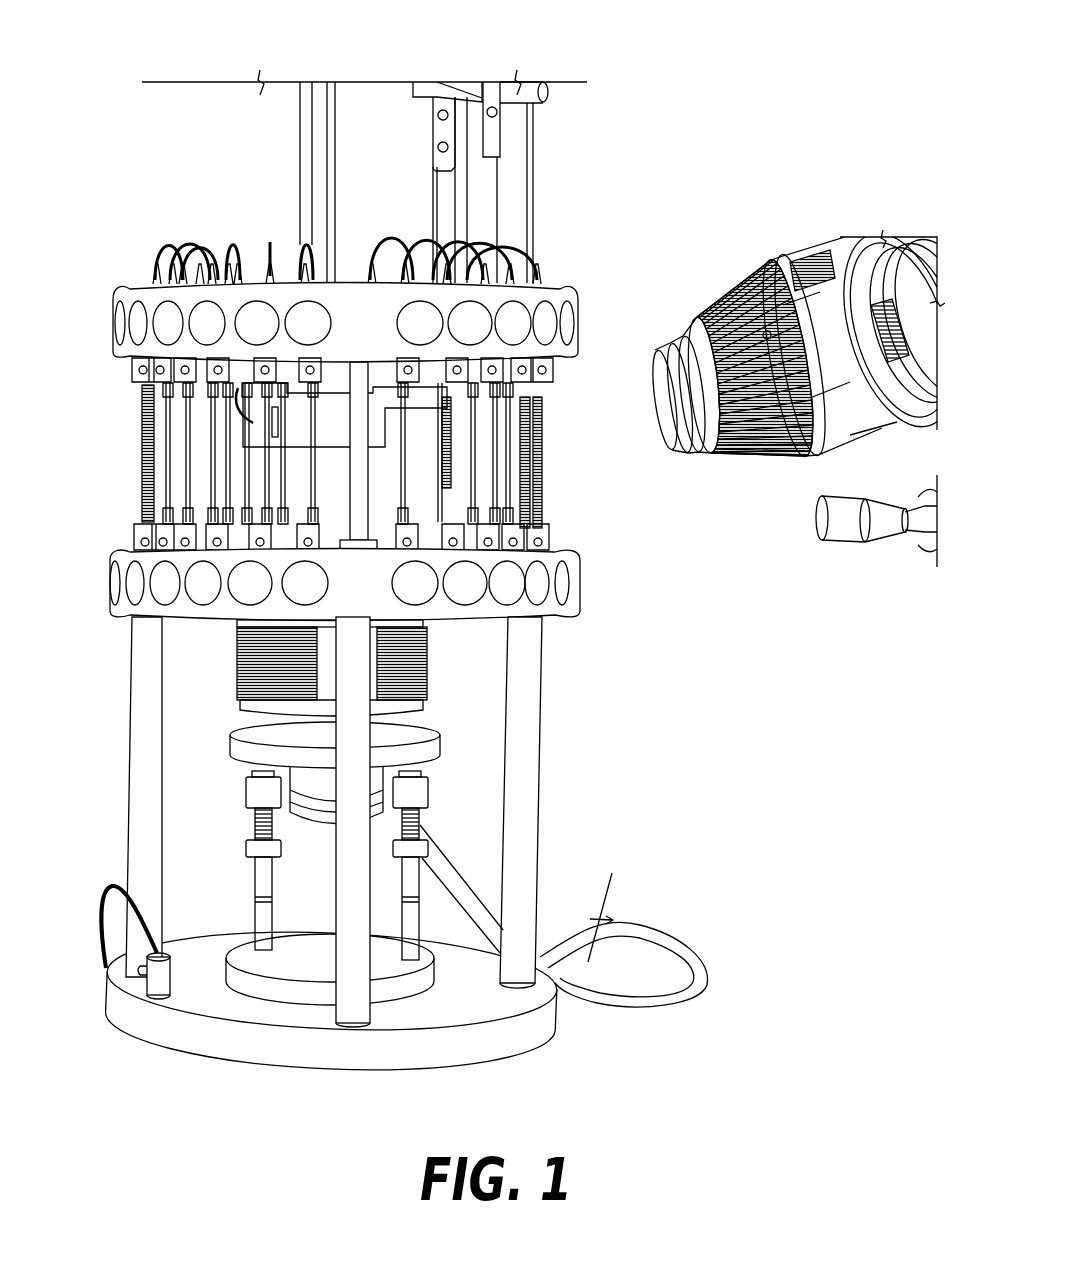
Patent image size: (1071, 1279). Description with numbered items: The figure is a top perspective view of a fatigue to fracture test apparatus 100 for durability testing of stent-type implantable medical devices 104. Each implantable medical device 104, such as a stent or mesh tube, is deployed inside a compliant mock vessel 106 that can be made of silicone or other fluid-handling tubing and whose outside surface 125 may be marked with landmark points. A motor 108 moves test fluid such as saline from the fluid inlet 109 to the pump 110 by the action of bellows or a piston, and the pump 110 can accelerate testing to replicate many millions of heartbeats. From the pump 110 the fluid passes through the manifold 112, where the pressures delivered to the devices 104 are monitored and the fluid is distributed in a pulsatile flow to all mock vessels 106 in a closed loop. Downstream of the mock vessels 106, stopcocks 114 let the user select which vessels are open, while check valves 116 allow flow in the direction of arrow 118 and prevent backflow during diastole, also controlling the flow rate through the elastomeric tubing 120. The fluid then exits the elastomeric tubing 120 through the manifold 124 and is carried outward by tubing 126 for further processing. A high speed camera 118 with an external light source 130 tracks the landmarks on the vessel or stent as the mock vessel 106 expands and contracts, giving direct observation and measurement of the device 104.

The fatigue to fracture test apparatus 100 is at (639, 75).
The implantable medical device 104 is at (447, 438).
The mock vessel 106 is at (473, 488).
The motor 108 is at (383, 883).
The fluid inlet 109 is at (640, 932).
The pump 110 is at (423, 676).
The manifold 112 is at (557, 547).
The stopcocks 114 is at (573, 360).
The check valves 116 is at (487, 543).
The high speed camera 118 is at (814, 245).
The elastomeric tubing 120 is at (450, 528).
The manifold 124 is at (568, 288).
The outside surface 125 is at (542, 472).
The tubing 126 is at (523, 268).
The external light source 130 is at (858, 545).